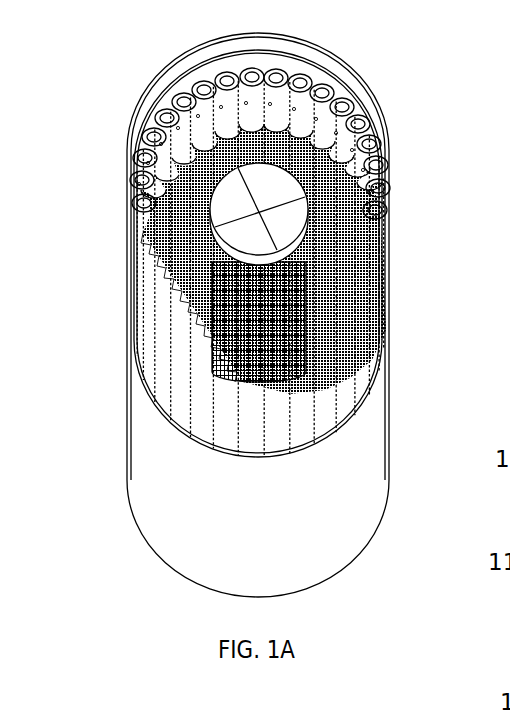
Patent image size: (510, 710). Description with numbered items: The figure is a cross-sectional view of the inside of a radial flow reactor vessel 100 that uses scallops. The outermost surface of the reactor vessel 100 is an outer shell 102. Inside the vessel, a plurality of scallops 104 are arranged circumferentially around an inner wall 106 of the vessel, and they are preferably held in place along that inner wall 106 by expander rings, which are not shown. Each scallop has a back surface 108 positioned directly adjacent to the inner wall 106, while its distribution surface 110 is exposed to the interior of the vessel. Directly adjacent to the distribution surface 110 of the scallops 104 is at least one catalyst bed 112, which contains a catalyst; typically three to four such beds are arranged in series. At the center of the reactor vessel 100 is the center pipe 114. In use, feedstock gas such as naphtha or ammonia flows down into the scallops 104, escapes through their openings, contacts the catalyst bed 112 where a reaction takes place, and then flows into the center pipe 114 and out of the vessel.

The reactor vessel 100 is at (255, 301).
The outer shell 102 is at (127, 428).
The scallops 104 is at (135, 145).
The inner wall 106 is at (314, 439).
The back surface 108 is at (207, 390).
The distribution surface 110 is at (322, 112).
The catalyst bed 112 is at (345, 276).
The center pipe 114 is at (232, 200).